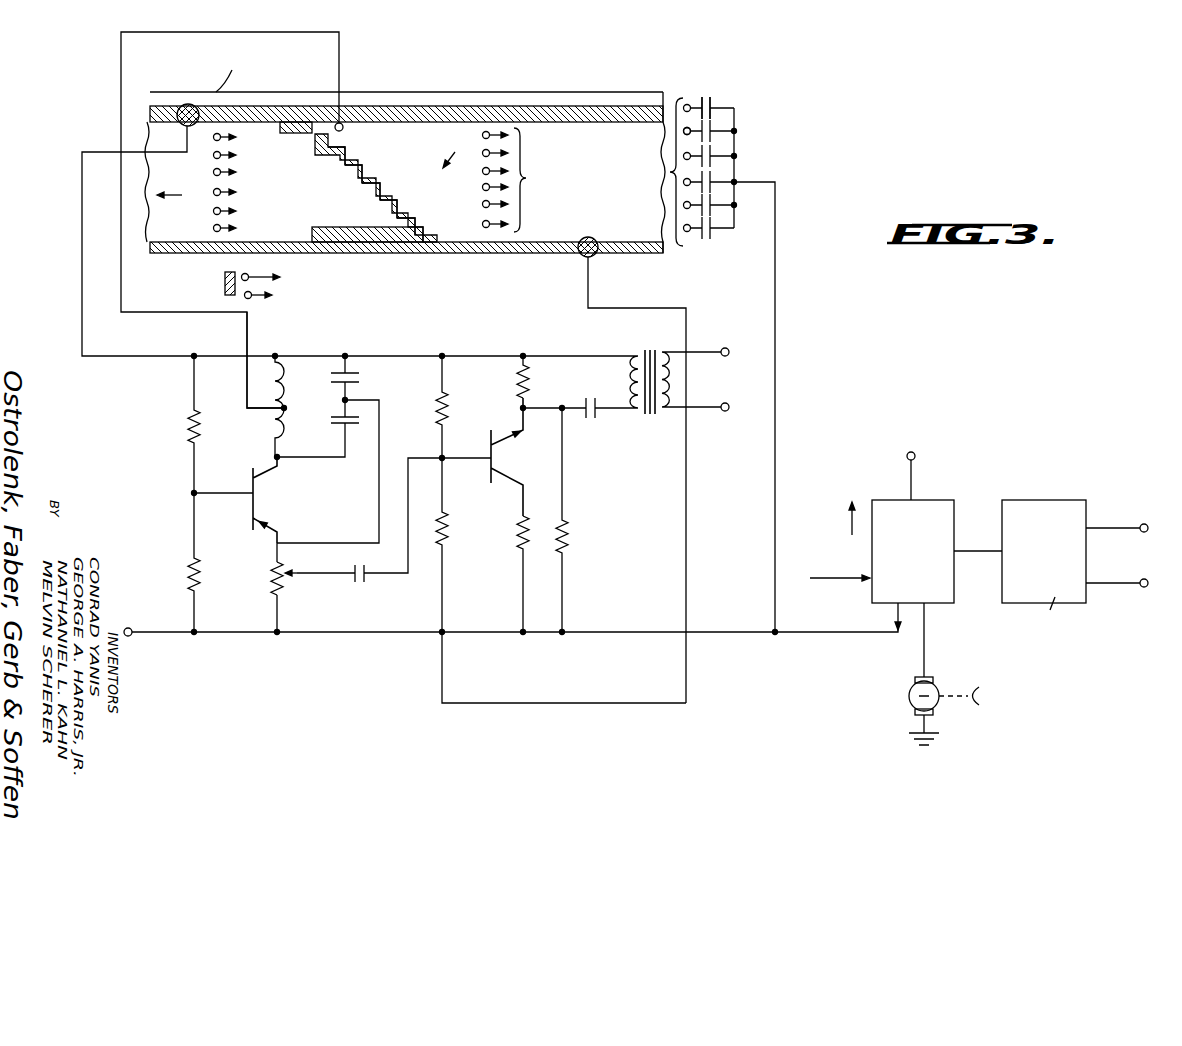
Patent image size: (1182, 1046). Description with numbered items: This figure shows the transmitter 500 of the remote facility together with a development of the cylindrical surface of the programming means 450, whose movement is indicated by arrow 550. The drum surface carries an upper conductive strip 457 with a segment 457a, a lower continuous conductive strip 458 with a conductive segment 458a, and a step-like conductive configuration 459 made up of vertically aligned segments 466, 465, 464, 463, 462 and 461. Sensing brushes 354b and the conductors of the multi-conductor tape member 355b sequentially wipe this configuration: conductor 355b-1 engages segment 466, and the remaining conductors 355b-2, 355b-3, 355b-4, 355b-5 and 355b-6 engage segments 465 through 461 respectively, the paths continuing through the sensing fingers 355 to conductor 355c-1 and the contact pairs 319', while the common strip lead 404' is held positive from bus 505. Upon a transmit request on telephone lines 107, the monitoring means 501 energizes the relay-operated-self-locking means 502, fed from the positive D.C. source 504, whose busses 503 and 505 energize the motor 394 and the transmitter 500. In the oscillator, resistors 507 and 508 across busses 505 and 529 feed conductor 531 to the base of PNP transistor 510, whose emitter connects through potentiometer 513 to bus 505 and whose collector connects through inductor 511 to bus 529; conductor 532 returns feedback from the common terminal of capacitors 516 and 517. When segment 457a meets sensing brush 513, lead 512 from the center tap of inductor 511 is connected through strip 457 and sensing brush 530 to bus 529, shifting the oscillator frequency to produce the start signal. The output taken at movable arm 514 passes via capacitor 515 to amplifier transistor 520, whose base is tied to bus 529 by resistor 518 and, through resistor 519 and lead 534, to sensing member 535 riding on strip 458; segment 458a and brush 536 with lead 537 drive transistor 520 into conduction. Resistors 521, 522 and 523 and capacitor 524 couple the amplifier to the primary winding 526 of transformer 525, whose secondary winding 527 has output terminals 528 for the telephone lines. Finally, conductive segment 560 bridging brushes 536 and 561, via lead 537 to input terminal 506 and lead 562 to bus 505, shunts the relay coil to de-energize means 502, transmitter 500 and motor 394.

The programming means 450 is at (520, 64).
The conductive strip 457 is at (594, 110).
The lower continuous conductive strip 458 is at (541, 258).
The conductive segment 457a is at (291, 121).
The conductive segment 458a is at (316, 239).
The multi-conductor tape member 355b is at (220, 71).
The vertically aligned segment 466 is at (331, 137).
The vertical segment 465 is at (346, 153).
The vertical segment 464 is at (363, 171).
The vertical segment 463 is at (381, 188).
The vertical segment 462 is at (399, 206).
The vertical segment 461 is at (437, 233).
The sensing brush 513 is at (383, 89).
The sensing brush 530 is at (184, 104).
The sensing member 535 is at (591, 237).
The sensing conductor 355b-1 is at (251, 137).
The contact 355b-2 is at (251, 155).
The contact 355b-3 is at (251, 172).
The contact 355b-4 is at (251, 192).
The contact 355b-5 is at (251, 211).
The contact 355b-6 is at (248, 228).
The sensing brushes 354b is at (528, 180).
The step-like conductive configuration 459 is at (455, 148).
The arrow 550 is at (182, 196).
The sensing fingers 355 is at (692, 105).
The switch contacts 319' is at (733, 88).
The conductor 355c-1 is at (692, 131).
The common strip lead 404' is at (769, 388).
The sensing brush 536 is at (223, 271).
The vertically aligned conductive segment 560 is at (225, 282).
The lead 537 is at (291, 271).
The sensing brush 561 is at (244, 296).
The lead 562 is at (261, 298).
The bus 529 is at (82, 238).
The lead 512 is at (248, 338).
The resistor 507 is at (188, 432).
The resistor 508 is at (193, 561).
The conductor 531 is at (242, 505).
The PNP transistor 510 is at (263, 503).
The inductor 511 is at (272, 420).
The capacitor 516 is at (360, 380).
The capacitor 517 is at (343, 420).
The conductor 532 is at (378, 530).
The movable arm 514 is at (326, 577).
The capacitor 515 is at (360, 585).
The resistor 518 is at (447, 413).
The resistor 519 is at (447, 536).
The transistor 520 is at (497, 456).
The resistor 521 is at (516, 548).
The resistor 522 is at (530, 390).
The resistor 523 is at (568, 546).
The capacitor member 524 is at (592, 419).
The transformer buffer means 525 is at (660, 320).
The primary winding 526 is at (633, 410).
The secondary winding 527 is at (668, 390).
The output terminals 528 is at (729, 357).
The bus 505 is at (330, 636).
The lead 534 is at (571, 704).
The transmitter 500 is at (758, 669).
The relay-operated-self-locking means 502 is at (942, 499).
The source of positive D.C. energy 504 is at (906, 458).
The input terminal 506 is at (851, 576).
The output lead 503 is at (926, 650).
The motor 394 is at (908, 699).
The monitoring means 501 is at (1053, 500).
The incoming telephone lines 107 is at (1126, 531).